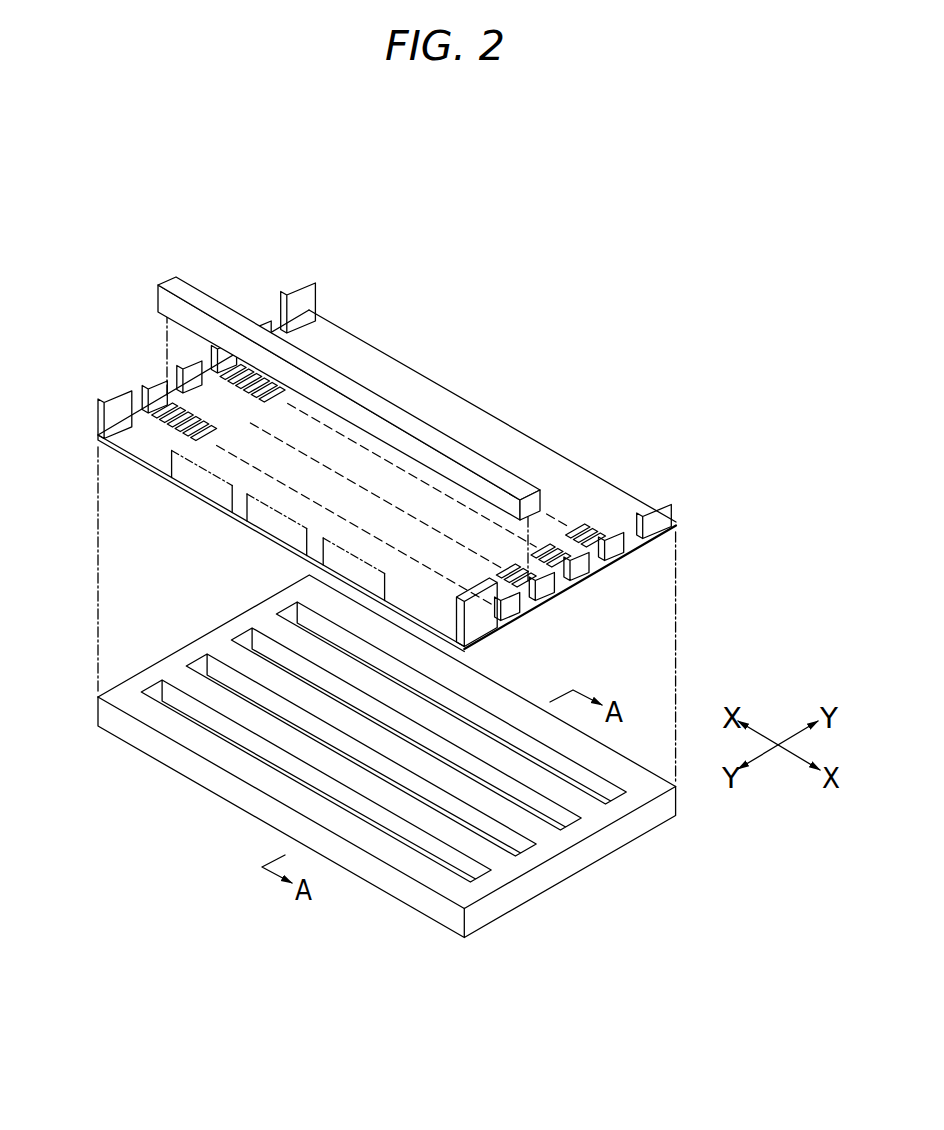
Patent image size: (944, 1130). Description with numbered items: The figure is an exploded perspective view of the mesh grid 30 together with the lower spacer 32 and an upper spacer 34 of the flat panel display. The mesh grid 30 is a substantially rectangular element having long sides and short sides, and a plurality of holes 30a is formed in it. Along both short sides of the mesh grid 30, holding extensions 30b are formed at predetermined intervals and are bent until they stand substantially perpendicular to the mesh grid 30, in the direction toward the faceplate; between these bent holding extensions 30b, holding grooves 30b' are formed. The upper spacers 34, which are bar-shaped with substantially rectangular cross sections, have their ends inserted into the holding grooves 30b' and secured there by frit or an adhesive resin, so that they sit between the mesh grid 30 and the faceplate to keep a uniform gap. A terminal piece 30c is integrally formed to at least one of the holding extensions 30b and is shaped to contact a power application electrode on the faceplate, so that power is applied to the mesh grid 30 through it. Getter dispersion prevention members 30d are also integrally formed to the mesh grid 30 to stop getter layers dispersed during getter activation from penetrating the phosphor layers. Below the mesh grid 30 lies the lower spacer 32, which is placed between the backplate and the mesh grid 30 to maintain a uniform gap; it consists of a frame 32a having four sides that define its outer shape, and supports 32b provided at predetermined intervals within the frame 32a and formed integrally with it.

The mesh grid 30 is at (98, 441).
The holes 30a is at (192, 443).
The holding extensions 30b is at (419, 452).
The holding grooves 30b' is at (591, 565).
The terminal piece 30c is at (492, 600).
The getter dispersion prevention members 30d is at (191, 470).
The lower spacer 32 is at (202, 598).
The frame 32a is at (163, 725).
The supports 32b is at (207, 693).
The upper spacers 34 is at (523, 490).